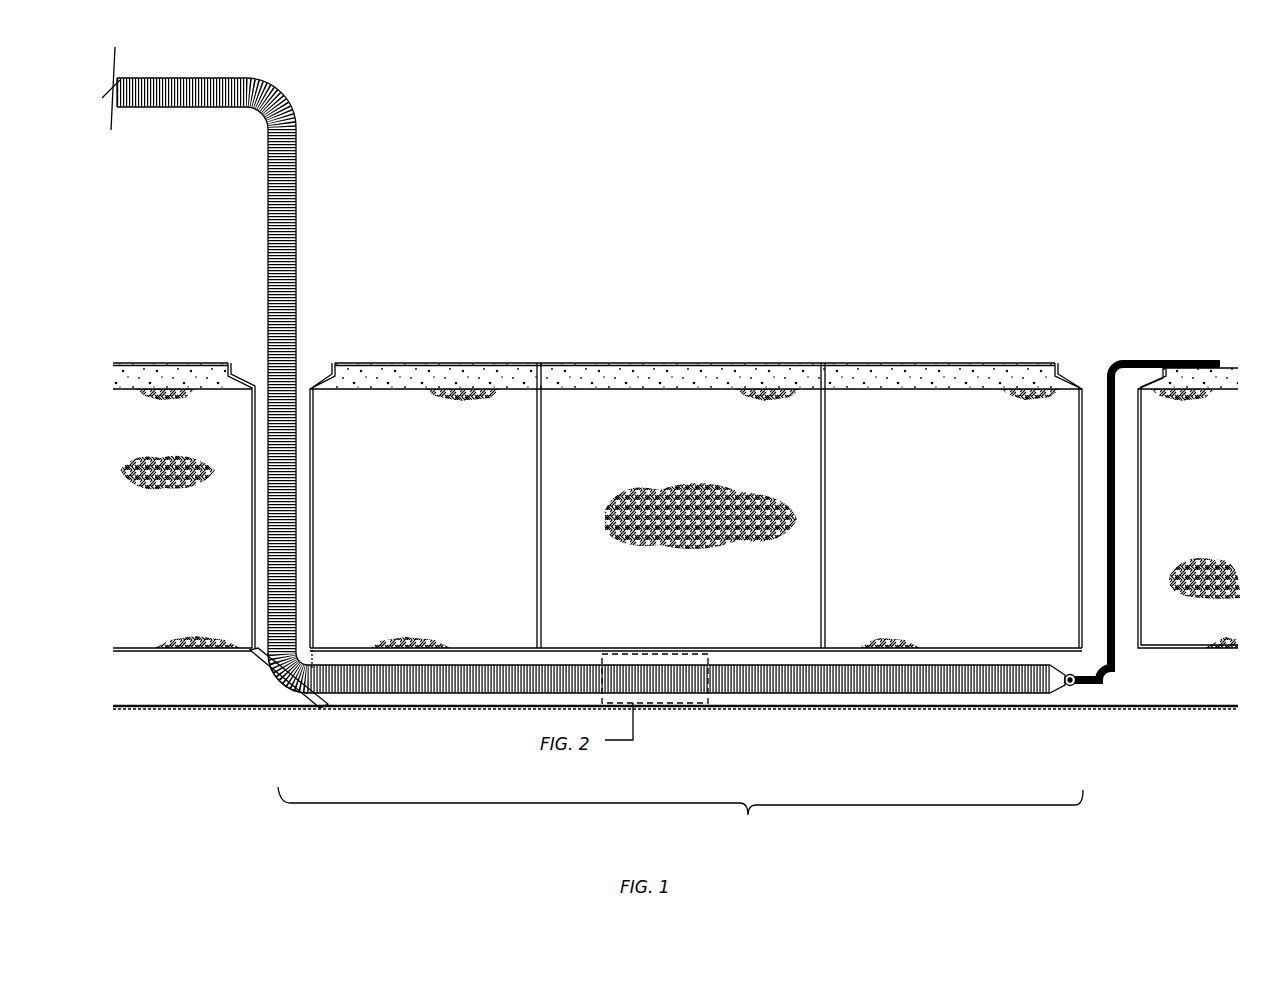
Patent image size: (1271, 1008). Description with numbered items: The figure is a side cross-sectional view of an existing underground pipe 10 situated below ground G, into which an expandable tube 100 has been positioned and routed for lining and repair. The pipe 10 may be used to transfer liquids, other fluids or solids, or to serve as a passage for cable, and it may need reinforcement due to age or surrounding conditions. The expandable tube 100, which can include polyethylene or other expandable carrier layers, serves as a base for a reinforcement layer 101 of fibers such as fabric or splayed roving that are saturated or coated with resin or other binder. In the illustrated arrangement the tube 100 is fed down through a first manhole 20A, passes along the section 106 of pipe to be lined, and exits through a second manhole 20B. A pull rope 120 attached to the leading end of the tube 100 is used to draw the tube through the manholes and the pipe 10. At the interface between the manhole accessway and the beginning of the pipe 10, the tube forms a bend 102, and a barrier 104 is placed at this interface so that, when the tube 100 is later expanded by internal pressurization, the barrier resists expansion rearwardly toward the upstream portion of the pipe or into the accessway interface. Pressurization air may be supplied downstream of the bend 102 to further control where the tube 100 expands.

The pipe 10 is at (235, 707).
The first manhole 20A is at (313, 378).
The second manhole 20B is at (1076, 380).
The ground G is at (893, 363).
The expandable tube 100 is at (298, 150).
The reinforcement layer 101 is at (437, 678).
The bend 102 is at (302, 691).
The barrier 104 is at (267, 660).
The section of pipe to be lined 106 is at (680, 814).
The pull rope 120 is at (1169, 361).